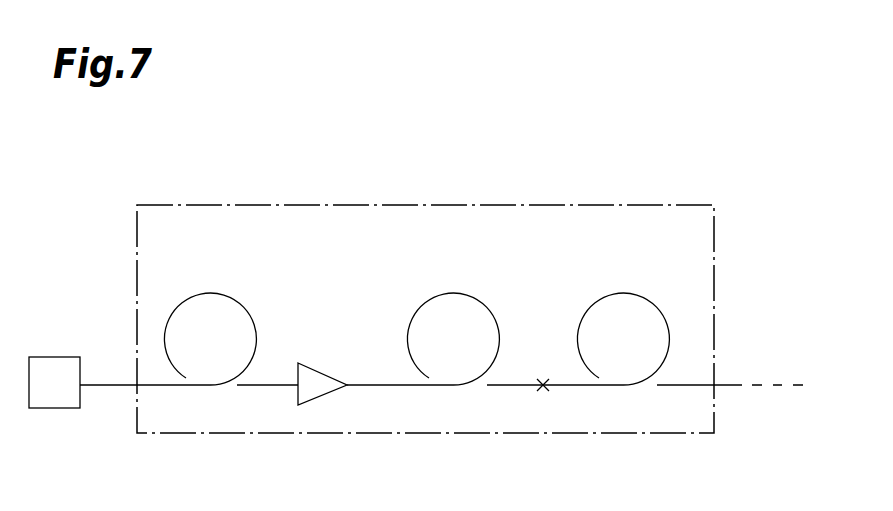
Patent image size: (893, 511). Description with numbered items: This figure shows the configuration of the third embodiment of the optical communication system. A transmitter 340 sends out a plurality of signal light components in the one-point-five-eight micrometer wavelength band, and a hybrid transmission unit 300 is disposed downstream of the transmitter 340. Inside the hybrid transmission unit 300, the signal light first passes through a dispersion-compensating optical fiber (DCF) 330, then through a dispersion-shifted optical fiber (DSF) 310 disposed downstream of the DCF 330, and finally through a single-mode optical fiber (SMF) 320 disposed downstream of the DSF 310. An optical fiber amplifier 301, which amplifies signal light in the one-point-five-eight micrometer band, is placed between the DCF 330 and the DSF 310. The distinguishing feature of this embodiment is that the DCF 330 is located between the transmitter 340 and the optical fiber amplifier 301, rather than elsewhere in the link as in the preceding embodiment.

The hybrid transmission unit 300 is at (670, 205).
The optical fiber amplifier 301 is at (305, 366).
The dispersion-shifted optical fiber (DSF) 310 is at (469, 299).
The single-mode optical fiber (SMF) 320 is at (643, 301).
The dispersion-compensating optical fiber (DCF) 330 is at (242, 307).
The transmitter 340 is at (53, 357).